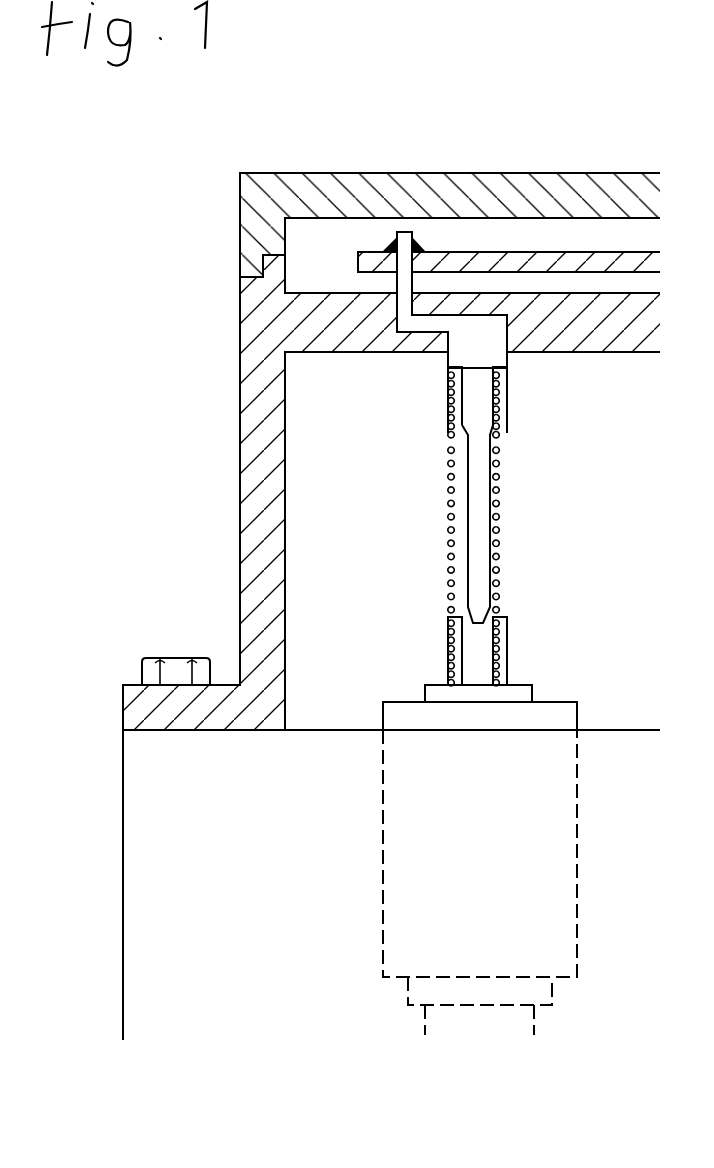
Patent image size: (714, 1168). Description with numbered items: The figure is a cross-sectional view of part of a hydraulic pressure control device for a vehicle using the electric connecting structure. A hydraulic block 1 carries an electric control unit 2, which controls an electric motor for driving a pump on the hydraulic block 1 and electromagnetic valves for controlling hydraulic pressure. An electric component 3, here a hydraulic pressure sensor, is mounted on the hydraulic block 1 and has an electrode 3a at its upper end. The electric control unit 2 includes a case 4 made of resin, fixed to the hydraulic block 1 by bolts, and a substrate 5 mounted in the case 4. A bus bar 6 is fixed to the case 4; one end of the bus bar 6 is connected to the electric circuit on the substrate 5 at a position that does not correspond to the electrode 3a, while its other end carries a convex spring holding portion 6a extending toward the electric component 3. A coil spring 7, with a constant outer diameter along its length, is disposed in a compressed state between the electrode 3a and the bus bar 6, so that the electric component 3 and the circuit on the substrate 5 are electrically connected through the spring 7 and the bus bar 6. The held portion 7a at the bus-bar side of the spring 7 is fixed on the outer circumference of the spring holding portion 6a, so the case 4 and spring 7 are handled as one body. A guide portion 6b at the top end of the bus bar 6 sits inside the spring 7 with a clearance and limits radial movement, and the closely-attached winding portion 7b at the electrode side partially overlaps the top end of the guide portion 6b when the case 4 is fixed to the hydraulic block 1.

The hydraulic block 1 is at (140, 900).
The electric control unit 2 is at (238, 446).
The electric component 3 is at (577, 702).
The electrode 3a is at (517, 694).
The case 4 is at (280, 321).
The substrate 5 is at (487, 262).
The bus bar 6 is at (460, 352).
The spring holding portion 6a is at (480, 395).
The guide portion 6b is at (468, 481).
The spring 7 is at (510, 520).
The held portion 7a is at (502, 418).
The closely-attached winding portion 7b is at (451, 628).